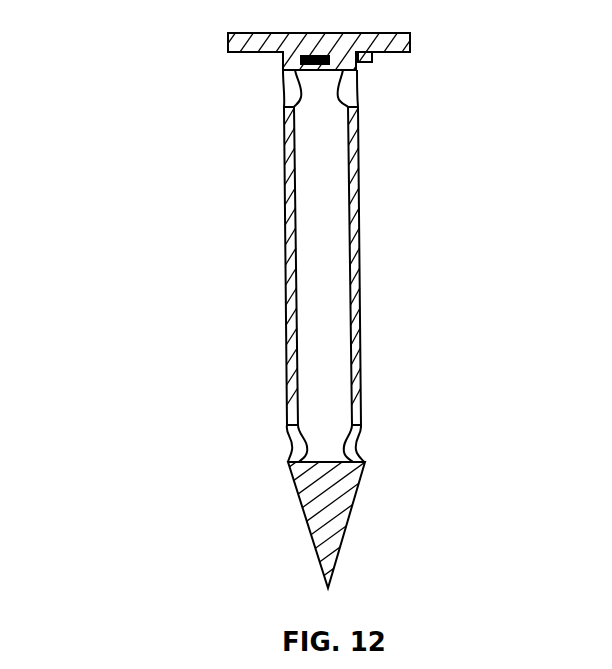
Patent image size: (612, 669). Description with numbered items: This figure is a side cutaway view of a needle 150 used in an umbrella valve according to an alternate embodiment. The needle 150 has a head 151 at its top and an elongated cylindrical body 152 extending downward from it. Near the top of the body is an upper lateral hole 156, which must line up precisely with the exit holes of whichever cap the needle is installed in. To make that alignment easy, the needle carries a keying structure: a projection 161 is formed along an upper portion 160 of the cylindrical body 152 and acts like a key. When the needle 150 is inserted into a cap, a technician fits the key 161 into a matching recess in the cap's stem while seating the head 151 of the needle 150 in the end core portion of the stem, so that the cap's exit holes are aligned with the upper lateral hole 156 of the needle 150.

The needle 150 is at (415, 211).
The head 151 is at (227, 45).
The cylindrical body 152 is at (286, 239).
The upper lateral hole 156 is at (360, 90).
The upper portion 160 is at (364, 62).
The projection 161 is at (297, 59).